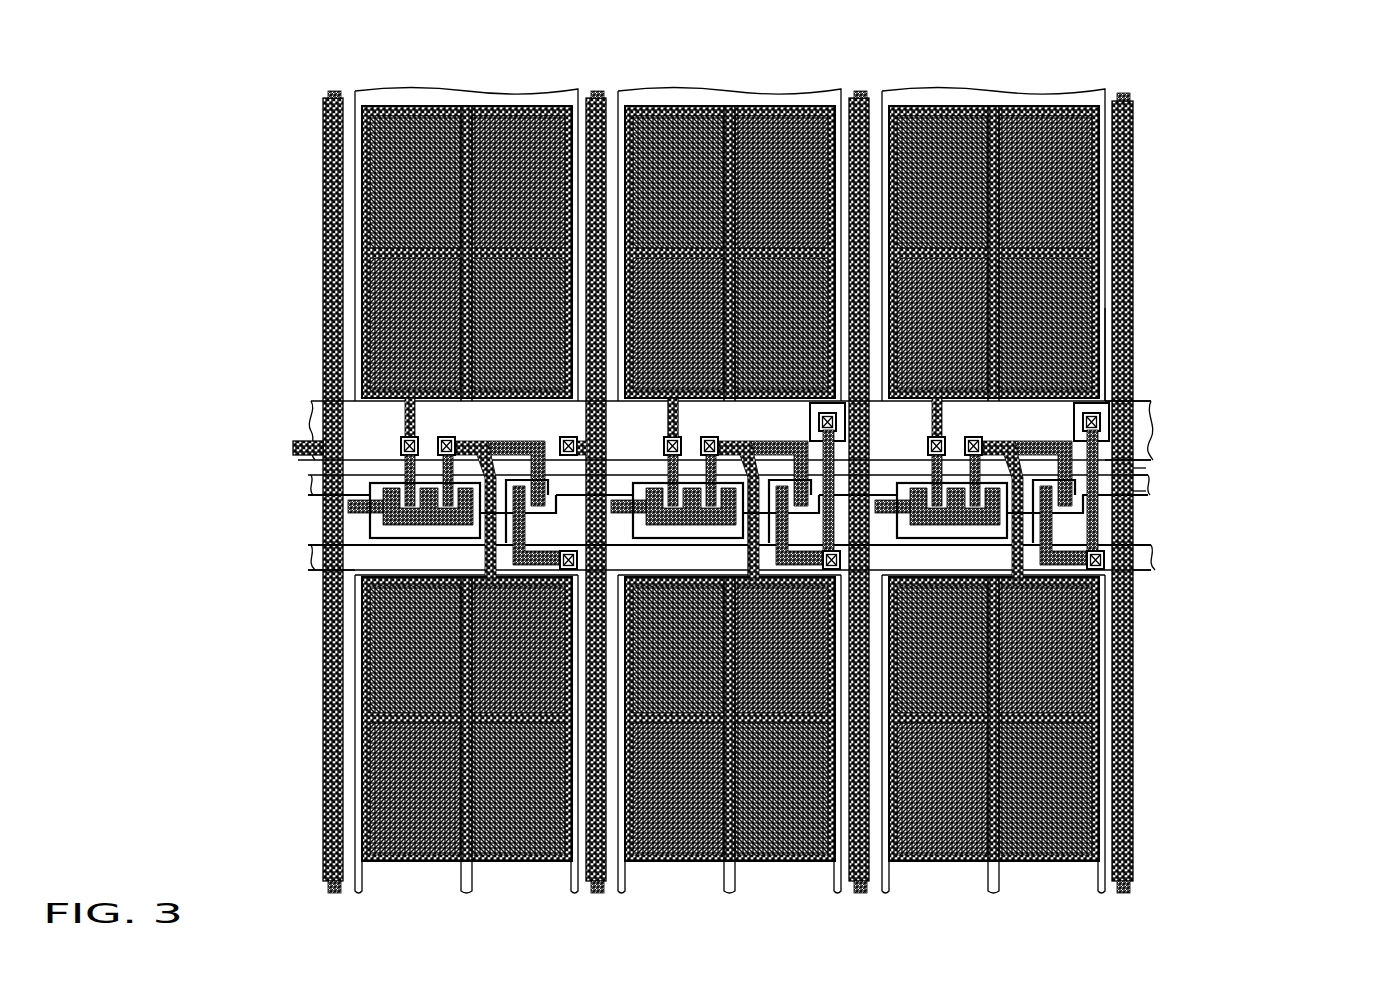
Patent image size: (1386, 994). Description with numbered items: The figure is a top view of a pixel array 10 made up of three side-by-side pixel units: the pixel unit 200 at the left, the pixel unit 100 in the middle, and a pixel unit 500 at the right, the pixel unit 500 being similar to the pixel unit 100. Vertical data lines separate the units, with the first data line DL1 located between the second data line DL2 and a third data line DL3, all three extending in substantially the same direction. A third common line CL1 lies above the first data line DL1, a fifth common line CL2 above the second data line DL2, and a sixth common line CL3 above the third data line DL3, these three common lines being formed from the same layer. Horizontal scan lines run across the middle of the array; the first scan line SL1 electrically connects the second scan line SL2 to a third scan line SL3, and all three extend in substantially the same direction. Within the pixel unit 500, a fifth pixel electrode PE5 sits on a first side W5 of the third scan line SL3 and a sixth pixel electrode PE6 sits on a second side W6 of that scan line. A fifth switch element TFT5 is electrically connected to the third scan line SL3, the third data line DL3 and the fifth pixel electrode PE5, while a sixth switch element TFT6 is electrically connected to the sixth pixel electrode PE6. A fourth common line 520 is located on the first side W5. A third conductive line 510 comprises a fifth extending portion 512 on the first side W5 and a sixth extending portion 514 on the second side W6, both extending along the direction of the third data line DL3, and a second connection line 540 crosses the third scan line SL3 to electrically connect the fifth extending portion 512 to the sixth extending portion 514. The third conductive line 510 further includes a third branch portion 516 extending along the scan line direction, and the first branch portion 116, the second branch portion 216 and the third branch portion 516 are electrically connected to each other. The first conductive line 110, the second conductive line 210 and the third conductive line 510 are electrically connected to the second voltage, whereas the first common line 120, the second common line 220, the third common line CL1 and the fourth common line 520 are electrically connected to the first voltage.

The pixel array 10 is at (803, 497).
The pixel unit 100 is at (536, 497).
The pixel unit 200 is at (467, 497).
The pixel unit 500 is at (1083, 521).
The first conductive line 110 is at (722, 100).
The second conductive line 210 is at (460, 100).
The first branch portion 116 is at (645, 553).
The first common line 120 is at (635, 422).
The second common line 220 is at (310, 418).
The second branch portion 216 is at (310, 565).
The third conductive line 510 is at (1330, 117).
The fifth extending portion 512 is at (1098, 372).
The sixth extending portion 514 is at (1112, 886).
The third branch portion 516 is at (1145, 561).
The fourth common line 520 is at (1135, 427).
The second connection line 540 is at (1132, 463).
The third common line CL1 is at (610, 100).
The fifth common line CL2 is at (318, 170).
The sixth common line CL3 is at (873, 100).
The first data line DL1 is at (590, 885).
The second data line DL2 is at (327, 885).
The third data line DL3 is at (852, 885).
The first scan line SL1 is at (497, 532).
The second scan line SL2 is at (300, 478).
The third scan line SL3 is at (1145, 478).
The fifth pixel electrode PE5 is at (1062, 192).
The sixth pixel electrode PE6 is at (1062, 672).
The fifth switch element TFT5 is at (925, 462).
The sixth switch element TFT6 is at (967, 490).
The first side W5 is at (1136, 461).
The second side W6 is at (1138, 487).